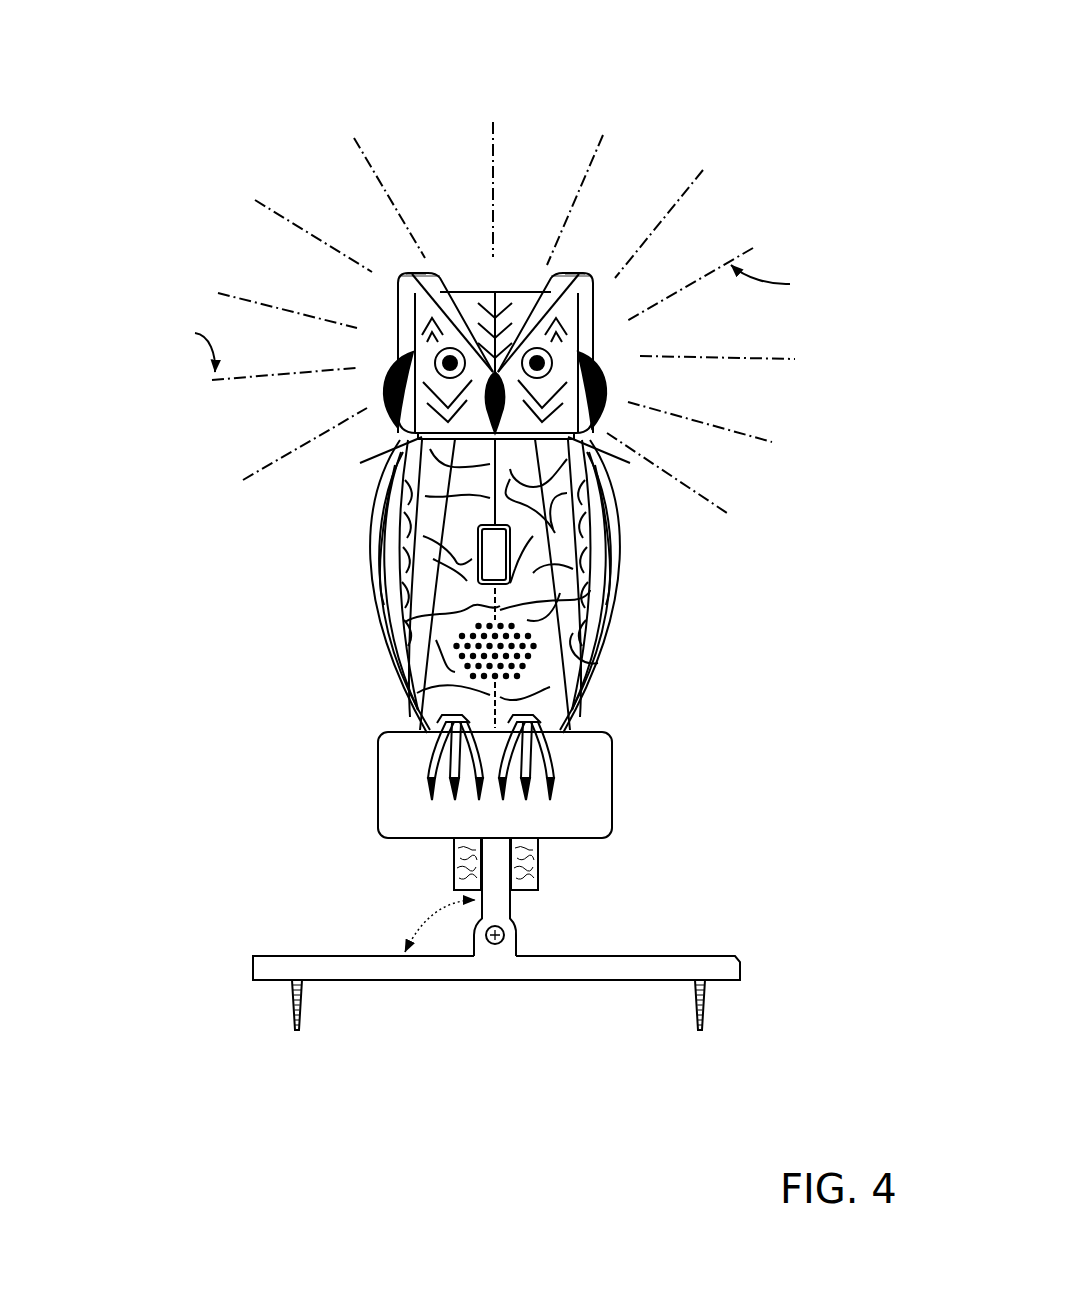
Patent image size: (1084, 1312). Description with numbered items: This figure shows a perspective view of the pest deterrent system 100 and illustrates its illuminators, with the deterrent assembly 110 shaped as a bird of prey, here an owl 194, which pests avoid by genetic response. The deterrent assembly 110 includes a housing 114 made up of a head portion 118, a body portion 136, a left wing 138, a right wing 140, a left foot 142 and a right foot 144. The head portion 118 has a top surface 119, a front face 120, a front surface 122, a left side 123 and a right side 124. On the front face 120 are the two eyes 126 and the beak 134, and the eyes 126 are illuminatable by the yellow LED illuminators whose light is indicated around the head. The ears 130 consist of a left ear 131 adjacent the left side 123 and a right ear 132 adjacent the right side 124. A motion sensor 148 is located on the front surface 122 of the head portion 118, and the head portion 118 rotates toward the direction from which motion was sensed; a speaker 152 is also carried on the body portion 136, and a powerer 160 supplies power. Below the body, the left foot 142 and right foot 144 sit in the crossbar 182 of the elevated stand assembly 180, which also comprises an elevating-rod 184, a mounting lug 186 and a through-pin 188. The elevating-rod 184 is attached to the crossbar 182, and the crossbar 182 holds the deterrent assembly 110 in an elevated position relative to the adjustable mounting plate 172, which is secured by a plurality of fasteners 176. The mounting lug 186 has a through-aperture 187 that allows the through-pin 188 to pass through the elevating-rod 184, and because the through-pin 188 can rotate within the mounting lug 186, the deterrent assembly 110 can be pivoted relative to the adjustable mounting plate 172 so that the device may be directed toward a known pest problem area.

The pest deterrent system 100 is at (742, 97).
The deterrent assembly 110 is at (783, 133).
The housing 114 is at (618, 608).
The head portion 118 is at (436, 420).
The top surface 119 is at (466, 287).
The front face 120 is at (608, 419).
The front surface 122 is at (420, 308).
The left side 123 is at (426, 388).
The right side 124 is at (601, 308).
The eyes 126 is at (558, 360).
The ears 130 is at (396, 285).
The left ear 131 is at (405, 273).
The right ear 132 is at (591, 270).
The beak 134 is at (508, 421).
The body portion 136 is at (420, 631).
The left wing 138 is at (365, 588).
The right wing 140 is at (629, 546).
The left foot 142 is at (422, 753).
The right foot 144 is at (561, 748).
The motion sensor 148 is at (516, 586).
The speaker 152 is at (534, 663).
The powerer 160 is at (512, 285).
The adjustable mounting plate 172 is at (668, 950).
The fasteners 176 is at (708, 995).
The elevated stand assembly 180 is at (375, 900).
The crossbar 182 is at (614, 803).
The elevating-rod 184 is at (513, 903).
The mounting lug 186 is at (493, 950).
The through-aperture 187 is at (480, 940).
The through-pin 188 is at (508, 942).
The owl 194 is at (382, 689).